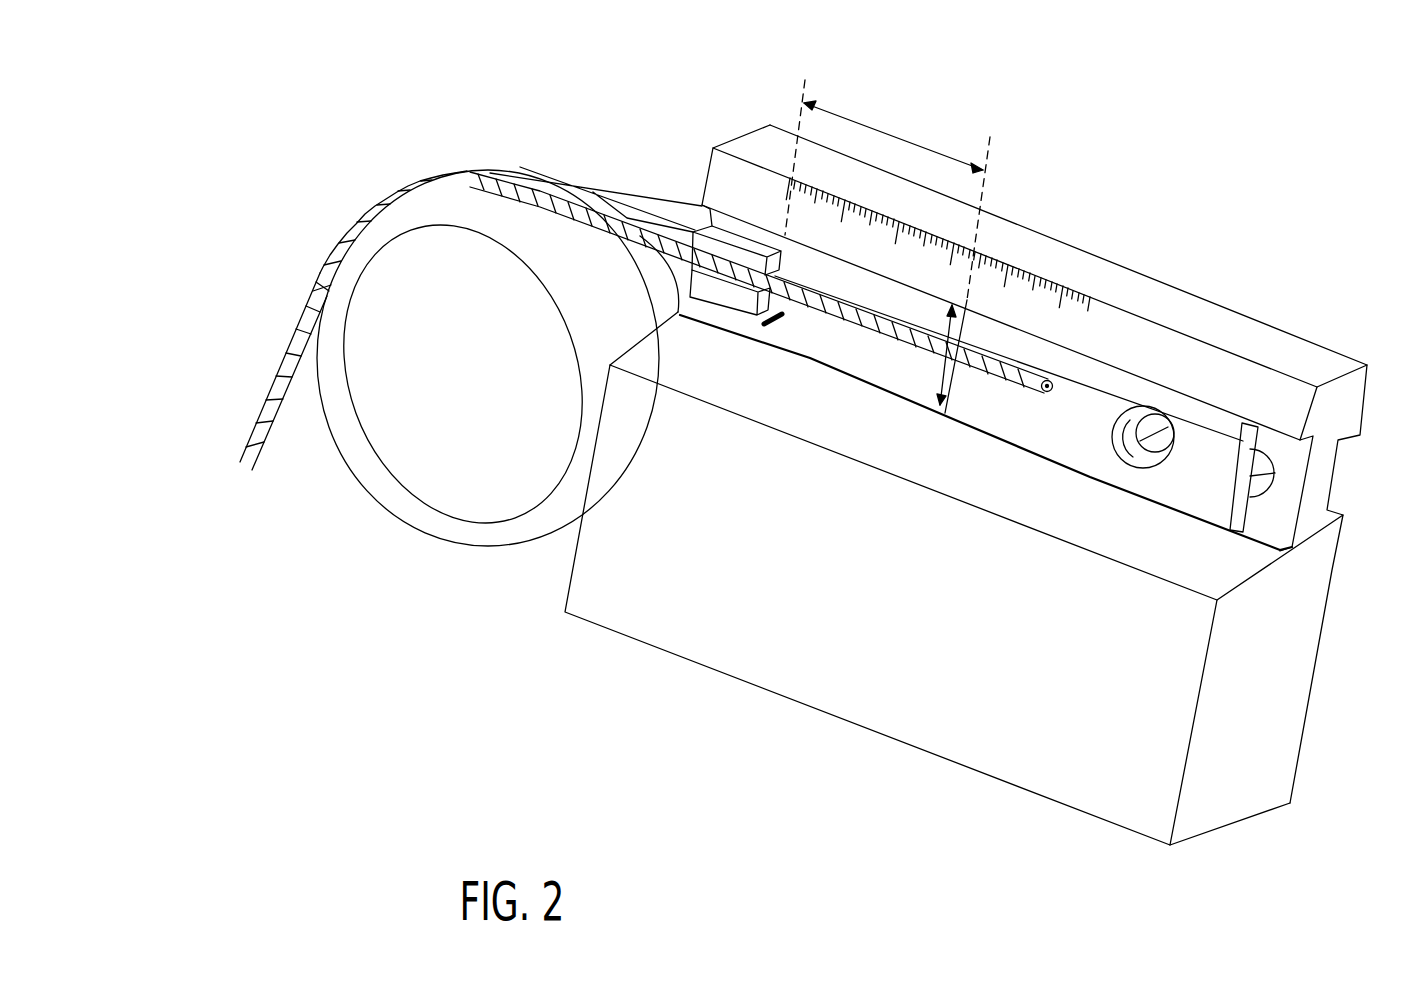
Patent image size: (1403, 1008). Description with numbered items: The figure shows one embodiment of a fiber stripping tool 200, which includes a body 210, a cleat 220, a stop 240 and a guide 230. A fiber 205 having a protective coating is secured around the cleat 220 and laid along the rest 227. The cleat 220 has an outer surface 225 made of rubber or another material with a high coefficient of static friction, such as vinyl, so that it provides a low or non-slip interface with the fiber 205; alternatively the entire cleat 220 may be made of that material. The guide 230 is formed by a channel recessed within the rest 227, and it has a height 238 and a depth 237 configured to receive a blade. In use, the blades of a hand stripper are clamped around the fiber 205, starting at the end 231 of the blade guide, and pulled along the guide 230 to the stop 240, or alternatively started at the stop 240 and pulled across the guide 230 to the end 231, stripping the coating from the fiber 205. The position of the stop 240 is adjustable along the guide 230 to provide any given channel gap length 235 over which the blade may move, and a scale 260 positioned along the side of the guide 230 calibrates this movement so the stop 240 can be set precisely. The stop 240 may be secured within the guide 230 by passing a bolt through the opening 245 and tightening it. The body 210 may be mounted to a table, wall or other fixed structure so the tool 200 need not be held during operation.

The fiber stripping tool 200 is at (375, 100).
The fiber 205 is at (268, 381).
The body 210 is at (820, 672).
The cleat 220 is at (434, 472).
The outer surface 225 is at (546, 182).
The rest 227 is at (705, 243).
The guide 230 is at (998, 261).
The end 231 is at (780, 246).
The channel gap length 235 is at (887, 190).
The depth 237 is at (782, 316).
The height 238 is at (943, 372).
The stop 240 is at (1097, 389).
The opening 245 is at (1154, 428).
The scale 260 is at (1080, 293).